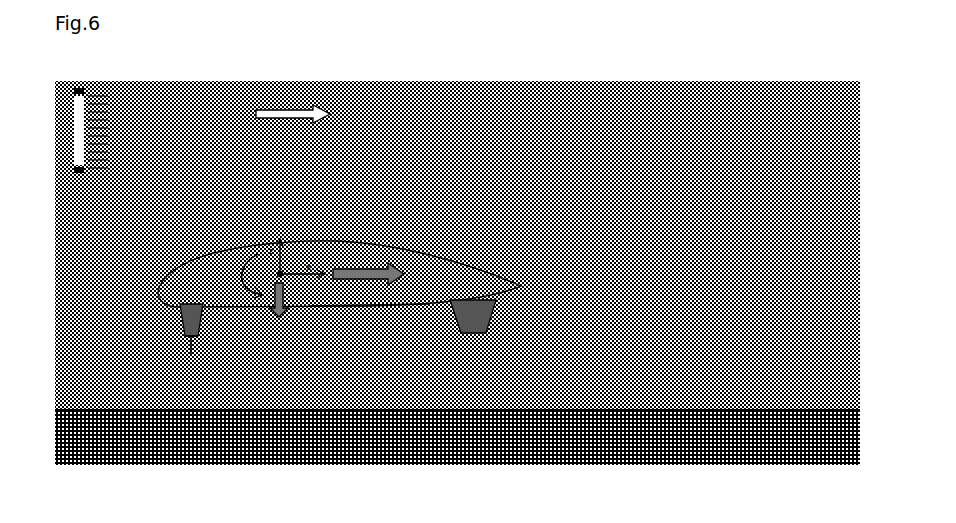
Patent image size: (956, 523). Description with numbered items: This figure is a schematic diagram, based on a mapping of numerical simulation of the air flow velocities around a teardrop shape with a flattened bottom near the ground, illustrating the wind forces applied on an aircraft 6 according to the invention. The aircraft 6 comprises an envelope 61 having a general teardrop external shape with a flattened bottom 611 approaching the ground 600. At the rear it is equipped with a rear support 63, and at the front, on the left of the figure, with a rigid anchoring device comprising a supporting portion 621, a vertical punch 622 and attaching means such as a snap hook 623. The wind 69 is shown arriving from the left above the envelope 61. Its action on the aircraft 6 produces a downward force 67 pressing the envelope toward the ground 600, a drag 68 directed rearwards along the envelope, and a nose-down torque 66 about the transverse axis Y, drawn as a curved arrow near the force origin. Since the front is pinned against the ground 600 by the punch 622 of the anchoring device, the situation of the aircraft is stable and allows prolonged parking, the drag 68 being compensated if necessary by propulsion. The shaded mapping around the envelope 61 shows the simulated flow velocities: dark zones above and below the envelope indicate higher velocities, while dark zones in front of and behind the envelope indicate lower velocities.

The aircraft 6 is at (354, 253).
The wind 69 is at (283, 102).
The nose-down torque 66 is at (233, 268).
The drag 68 is at (366, 250).
The envelope 61 is at (437, 268).
The rear support 63 is at (480, 310).
The supporting portion 621 is at (175, 306).
The punch 622 is at (183, 337).
The snap hook 623 is at (191, 330).
The downward force 67 is at (280, 287).
The flattened bottom 611 is at (362, 300).
The ground 600 is at (423, 403).